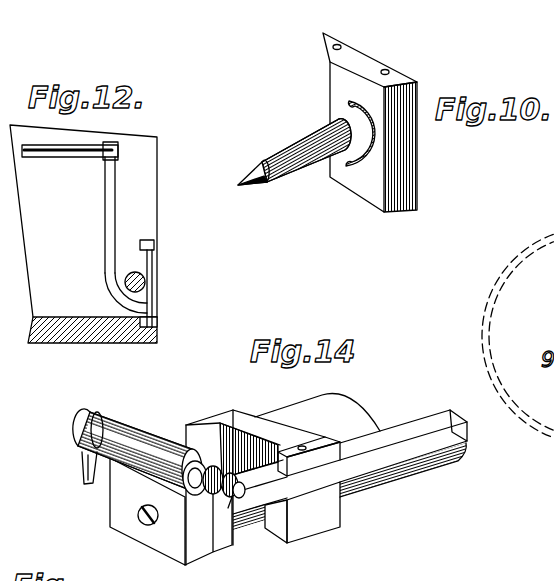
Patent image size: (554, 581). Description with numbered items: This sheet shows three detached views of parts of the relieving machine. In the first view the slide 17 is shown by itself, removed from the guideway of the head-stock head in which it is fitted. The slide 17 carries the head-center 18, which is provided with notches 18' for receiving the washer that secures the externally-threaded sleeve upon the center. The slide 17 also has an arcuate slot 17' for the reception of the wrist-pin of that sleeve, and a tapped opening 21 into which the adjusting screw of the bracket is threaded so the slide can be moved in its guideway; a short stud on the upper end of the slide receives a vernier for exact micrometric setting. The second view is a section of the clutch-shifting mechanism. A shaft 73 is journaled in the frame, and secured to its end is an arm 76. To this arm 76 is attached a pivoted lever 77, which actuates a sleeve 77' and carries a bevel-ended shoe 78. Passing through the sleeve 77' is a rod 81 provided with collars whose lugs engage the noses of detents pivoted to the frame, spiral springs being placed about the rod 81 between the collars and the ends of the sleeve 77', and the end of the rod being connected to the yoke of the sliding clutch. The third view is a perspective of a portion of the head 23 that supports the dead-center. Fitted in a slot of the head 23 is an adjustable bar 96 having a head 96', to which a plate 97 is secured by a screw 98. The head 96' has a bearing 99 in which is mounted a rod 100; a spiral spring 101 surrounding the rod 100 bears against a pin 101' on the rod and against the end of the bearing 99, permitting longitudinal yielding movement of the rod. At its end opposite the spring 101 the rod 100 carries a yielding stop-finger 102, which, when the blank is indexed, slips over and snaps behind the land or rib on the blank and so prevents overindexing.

In FIG. 12, the shaft 73 is at (62, 150).
In FIG. 12, the arm 76 is at (110, 202).
In FIG. 12, the pivoted lever 77 is at (172, 288).
In FIG. 12, the sleeve 77' is at (164, 293).
In FIG. 12, the bevel-ended shoe 78 is at (154, 243).
In FIG. 12, the rod 81 is at (123, 283).
In FIG. 10, the slide 17 is at (396, 122).
In FIG. 10, the opening 21 is at (389, 72).
In FIG. 10, the arcuate slot 17' is at (359, 170).
In FIG. 10, the head-center 18 is at (306, 150).
In FIG. 10, the notches 18' is at (267, 174).
In FIG. 14, the head 23 is at (208, 422).
In FIG. 14, the adjustable bar 96 is at (346, 470).
In FIG. 14, the head of adjustable bar 96' is at (282, 512).
In FIG. 14, the plate 97 is at (200, 550).
In FIG. 14, the screw 98 is at (148, 523).
In FIG. 14, the bearing 99 is at (138, 433).
In FIG. 14, the rod 100 is at (309, 457).
In FIG. 14, the spiral spring 101 is at (234, 445).
In FIG. 14, the pin 101' is at (323, 433).
In FIG. 14, the yielding stop-finger 102 is at (85, 485).